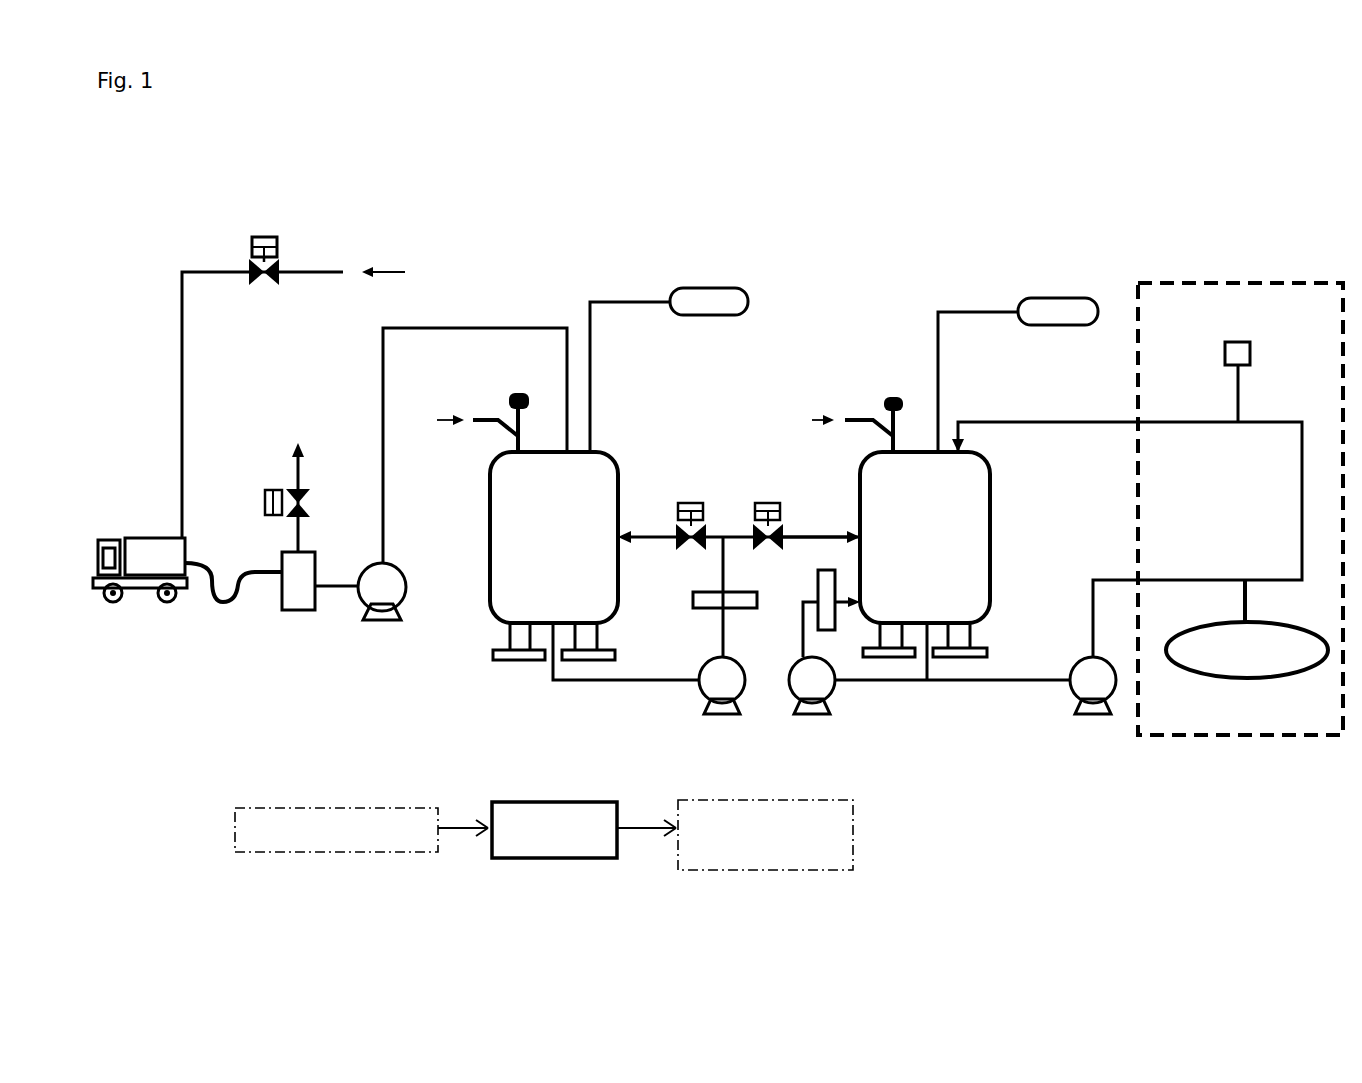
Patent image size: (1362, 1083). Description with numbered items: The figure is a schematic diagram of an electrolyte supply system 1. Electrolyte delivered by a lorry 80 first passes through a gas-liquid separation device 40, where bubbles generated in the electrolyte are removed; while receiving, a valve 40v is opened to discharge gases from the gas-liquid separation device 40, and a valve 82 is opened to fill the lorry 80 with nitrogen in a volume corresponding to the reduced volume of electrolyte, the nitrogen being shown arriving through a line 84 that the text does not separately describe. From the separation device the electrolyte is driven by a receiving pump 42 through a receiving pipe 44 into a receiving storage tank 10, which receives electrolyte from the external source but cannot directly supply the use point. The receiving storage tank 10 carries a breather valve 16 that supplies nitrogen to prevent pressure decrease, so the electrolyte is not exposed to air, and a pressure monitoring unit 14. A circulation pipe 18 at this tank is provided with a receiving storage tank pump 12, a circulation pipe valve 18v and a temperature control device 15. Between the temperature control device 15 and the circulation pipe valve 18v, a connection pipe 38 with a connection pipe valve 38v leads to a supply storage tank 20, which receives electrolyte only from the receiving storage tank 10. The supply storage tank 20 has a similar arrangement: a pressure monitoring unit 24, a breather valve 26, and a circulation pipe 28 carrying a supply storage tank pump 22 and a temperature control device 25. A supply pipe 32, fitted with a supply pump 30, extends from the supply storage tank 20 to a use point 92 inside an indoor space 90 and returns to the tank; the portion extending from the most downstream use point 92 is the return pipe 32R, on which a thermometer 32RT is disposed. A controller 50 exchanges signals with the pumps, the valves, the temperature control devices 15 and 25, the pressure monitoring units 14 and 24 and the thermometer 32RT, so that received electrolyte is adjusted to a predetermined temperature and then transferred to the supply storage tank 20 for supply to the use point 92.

The electrolyte supply system 1 is at (852, 232).
The receiving storage tank 10 is at (538, 570).
The receiving storage tank pump 12 is at (720, 717).
The pressure monitoring unit 14 is at (712, 288).
The temperature control device 15 is at (693, 594).
The breather valve 16 is at (497, 413).
The circulation pipe 18 is at (627, 683).
The circulation pipe valve 18v is at (683, 500).
The supply storage tank 20 is at (913, 563).
The supply storage tank pump 22 is at (810, 720).
The pressure monitoring unit 24 is at (1062, 298).
The temperature control device 25 is at (815, 598).
The breather valve 26 is at (882, 408).
The circulation pipe 28 is at (873, 682).
The supply pump 30 is at (1085, 715).
The supply pipe 32 is at (1107, 578).
The return pipe 32R is at (1160, 422).
The thermometer 32RT is at (1250, 350).
The connection pipe 38 is at (825, 532).
The connection pipe valve 38v is at (767, 500).
The gas-liquid separation device 40 is at (286, 612).
The valve 40v is at (265, 505).
The receiving pump 42 is at (376, 622).
The receiving pipe 44 is at (383, 452).
The controller 50 is at (535, 849).
The lorry 80 is at (138, 597).
The valve 82 is at (263, 236).
The nitrogen supply pipe 84 is at (182, 357).
The indoor space 90 is at (1203, 282).
The use point 92 is at (1231, 666).